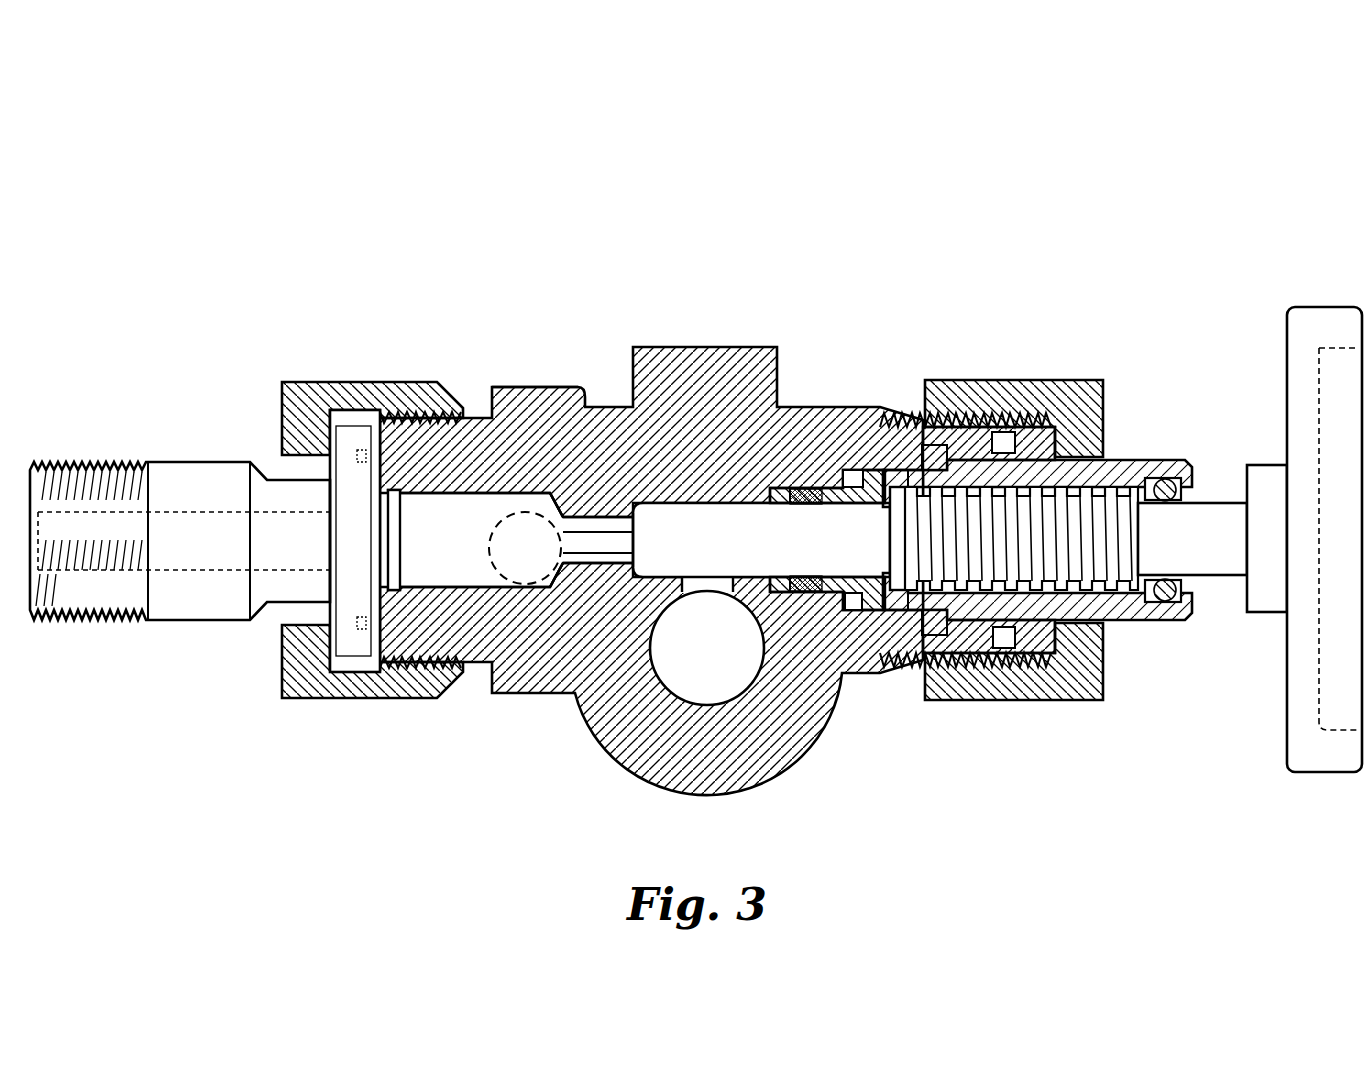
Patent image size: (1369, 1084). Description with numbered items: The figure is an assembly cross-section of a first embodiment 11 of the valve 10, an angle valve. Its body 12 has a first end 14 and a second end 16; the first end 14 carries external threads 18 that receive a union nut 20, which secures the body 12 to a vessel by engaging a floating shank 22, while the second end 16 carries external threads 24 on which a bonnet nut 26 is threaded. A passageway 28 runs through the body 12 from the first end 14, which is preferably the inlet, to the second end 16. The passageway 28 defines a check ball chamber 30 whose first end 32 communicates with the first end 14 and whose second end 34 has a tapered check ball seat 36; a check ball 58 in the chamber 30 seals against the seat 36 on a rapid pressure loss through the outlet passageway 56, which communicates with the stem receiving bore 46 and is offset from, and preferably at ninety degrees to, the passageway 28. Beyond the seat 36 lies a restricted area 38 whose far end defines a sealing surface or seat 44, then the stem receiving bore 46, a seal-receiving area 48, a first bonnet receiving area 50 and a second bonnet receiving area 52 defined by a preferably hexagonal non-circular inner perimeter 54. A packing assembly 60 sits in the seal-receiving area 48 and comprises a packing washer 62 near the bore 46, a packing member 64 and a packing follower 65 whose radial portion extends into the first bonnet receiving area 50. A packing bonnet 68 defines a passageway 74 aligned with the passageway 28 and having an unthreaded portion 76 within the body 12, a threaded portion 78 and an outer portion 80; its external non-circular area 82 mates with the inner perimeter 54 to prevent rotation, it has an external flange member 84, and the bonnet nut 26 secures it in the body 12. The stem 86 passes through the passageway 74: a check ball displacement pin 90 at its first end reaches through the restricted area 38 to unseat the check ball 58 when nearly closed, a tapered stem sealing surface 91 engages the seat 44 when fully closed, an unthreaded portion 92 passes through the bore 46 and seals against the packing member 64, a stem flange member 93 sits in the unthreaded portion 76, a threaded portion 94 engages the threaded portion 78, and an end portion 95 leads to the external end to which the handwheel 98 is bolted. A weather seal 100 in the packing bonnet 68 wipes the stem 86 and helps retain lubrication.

The valve 10 is at (968, 243).
The first embodiment of valve 11 is at (1033, 283).
The body 12 is at (582, 437).
The first end 14 is at (347, 637).
The second end 16 is at (1020, 430).
The external threads 18 is at (465, 680).
The union nut 20 is at (340, 698).
The floating shank 22 is at (353, 588).
The external threads 24 is at (900, 418).
The bonnet nut 26 is at (1110, 380).
The passageway 28 is at (715, 493).
The check ball chamber 30 is at (456, 568).
The first end of check ball chamber 32 is at (375, 513).
The second end of check ball chamber 34 is at (578, 500).
The tapered check ball seat 36 is at (550, 512).
The restricted area 38 is at (598, 525).
The sealing surface or seat 44 is at (665, 440).
The stem receiving bore 46 is at (725, 507).
The seal-receiving area 48 is at (813, 593).
The first bonnet receiving area 50 is at (843, 473).
The second bonnet receiving area 52 is at (950, 455).
The non-circular inner perimeter 54 is at (932, 432).
The outlet passageway 56 is at (700, 668).
The check ball 58 is at (497, 523).
The packing assembly 60 is at (820, 488).
The packing washer 62 is at (787, 503).
The packing member 64 is at (773, 490).
The packing follower 65 is at (875, 470).
The packing bonnet 68 is at (955, 662).
The passageway of packing bonnet 74 is at (1060, 597).
The unthreaded portion 76 is at (920, 593).
The threaded portion 78 is at (1080, 595).
The outer portion 80 is at (1140, 598).
The external non-circular area 82 is at (940, 697).
The external flange member 84 is at (1037, 663).
The stem 86 is at (760, 556).
The check ball displacement pin 90 is at (588, 543).
The tapered stem sealing surface 91 is at (648, 556).
The unthreaded portion 92 is at (712, 583).
The stem flange member 93 is at (885, 530).
The threaded portion 94 is at (1128, 602).
The end portion 95 is at (1218, 578).
The handwheel 98 is at (1330, 307).
The weather seal 100 is at (1168, 480).